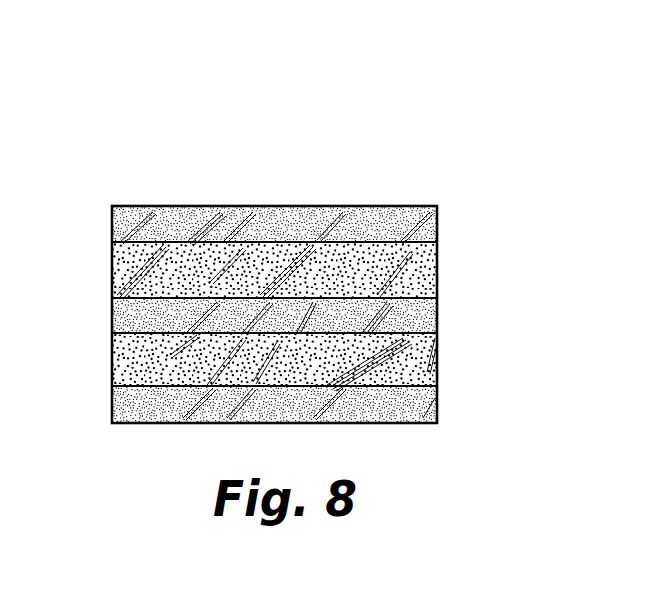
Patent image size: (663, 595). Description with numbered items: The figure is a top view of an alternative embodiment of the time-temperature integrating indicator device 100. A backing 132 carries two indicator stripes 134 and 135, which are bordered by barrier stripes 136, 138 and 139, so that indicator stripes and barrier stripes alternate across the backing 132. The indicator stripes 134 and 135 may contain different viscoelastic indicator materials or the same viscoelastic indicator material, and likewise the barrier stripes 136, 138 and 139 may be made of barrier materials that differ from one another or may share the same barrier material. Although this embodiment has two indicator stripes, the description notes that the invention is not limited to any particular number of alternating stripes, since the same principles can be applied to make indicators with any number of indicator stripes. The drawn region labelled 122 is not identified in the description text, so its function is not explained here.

The indicator device 100 is at (273, 272).
The reinforcing fibers 122 is at (122, 263).
The backing 132 is at (290, 206).
The indicator stripe 134 is at (420, 265).
The barrier stripe 136 is at (428, 228).
The barrier stripe 138 is at (430, 325).
The indicator stripe 135 is at (427, 372).
The barrier stripe 139 is at (430, 415).